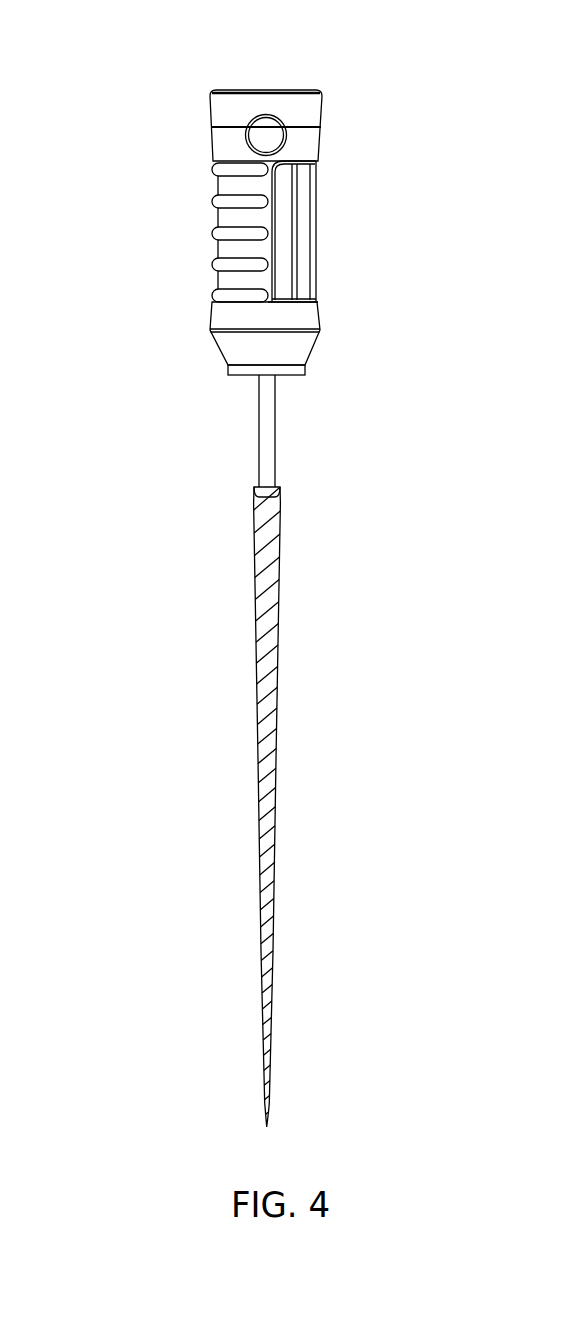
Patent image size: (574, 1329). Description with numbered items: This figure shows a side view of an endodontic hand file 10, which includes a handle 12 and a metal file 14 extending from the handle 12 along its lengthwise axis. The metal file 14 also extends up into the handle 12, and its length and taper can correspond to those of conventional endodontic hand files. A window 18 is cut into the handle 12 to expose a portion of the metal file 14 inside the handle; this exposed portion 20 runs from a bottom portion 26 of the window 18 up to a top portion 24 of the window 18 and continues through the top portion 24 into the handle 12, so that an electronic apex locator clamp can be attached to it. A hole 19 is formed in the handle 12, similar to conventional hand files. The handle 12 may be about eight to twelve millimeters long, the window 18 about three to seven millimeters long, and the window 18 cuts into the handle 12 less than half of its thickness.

The endodontic hand file 10 is at (148, 50).
The handle 12 is at (212, 215).
The metal file 14 is at (258, 813).
The window 18 is at (333, 179).
The hole 19 is at (266, 135).
The exposed portion 20 is at (312, 237).
The top portion 24 is at (320, 162).
The bottom portion 26 is at (318, 301).